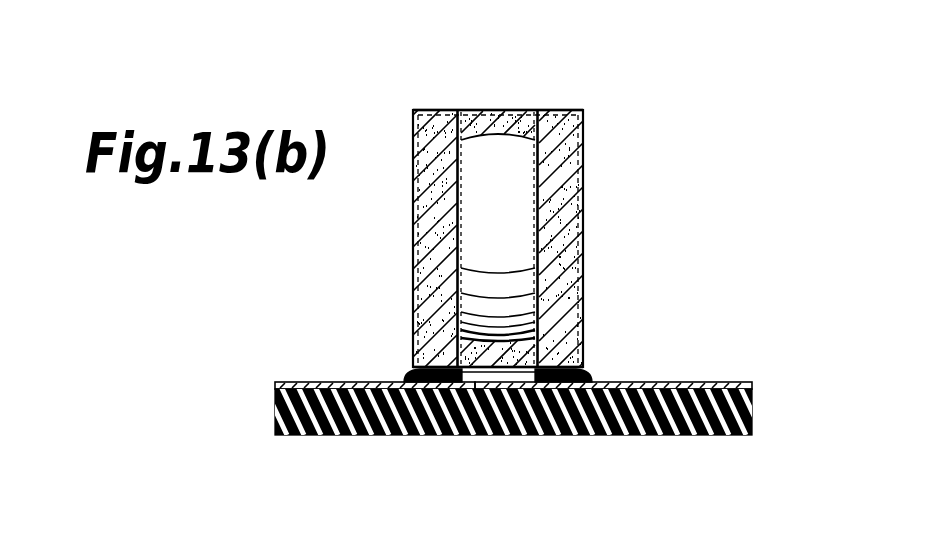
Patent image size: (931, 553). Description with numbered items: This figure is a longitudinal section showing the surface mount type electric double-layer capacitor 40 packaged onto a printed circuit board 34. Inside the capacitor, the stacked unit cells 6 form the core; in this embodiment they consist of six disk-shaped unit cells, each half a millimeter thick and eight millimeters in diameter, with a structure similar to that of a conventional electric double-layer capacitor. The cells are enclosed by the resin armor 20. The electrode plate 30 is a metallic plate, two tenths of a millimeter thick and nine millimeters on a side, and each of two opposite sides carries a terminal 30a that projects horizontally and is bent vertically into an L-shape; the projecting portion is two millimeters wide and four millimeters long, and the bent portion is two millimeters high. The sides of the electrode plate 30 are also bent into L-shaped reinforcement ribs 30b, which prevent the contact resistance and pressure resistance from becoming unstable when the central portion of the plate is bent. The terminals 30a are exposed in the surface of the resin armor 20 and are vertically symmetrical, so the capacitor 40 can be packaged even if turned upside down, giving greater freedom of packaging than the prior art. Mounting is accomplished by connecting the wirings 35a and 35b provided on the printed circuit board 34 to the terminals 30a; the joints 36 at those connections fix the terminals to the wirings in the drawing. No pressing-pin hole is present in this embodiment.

The stacked unit cells 6 is at (485, 153).
The resin armor 20 is at (505, 108).
The electrode plate 30 is at (417, 222).
The terminal 30a is at (412, 108).
The reinforcement rib 30b is at (415, 172).
The printed circuit board 34 is at (677, 435).
The wiring 35a is at (300, 382).
The wiring 35b is at (712, 382).
The solder 36 is at (405, 373).
The surface mount type electric double-layer capacitor 40 is at (566, 94).